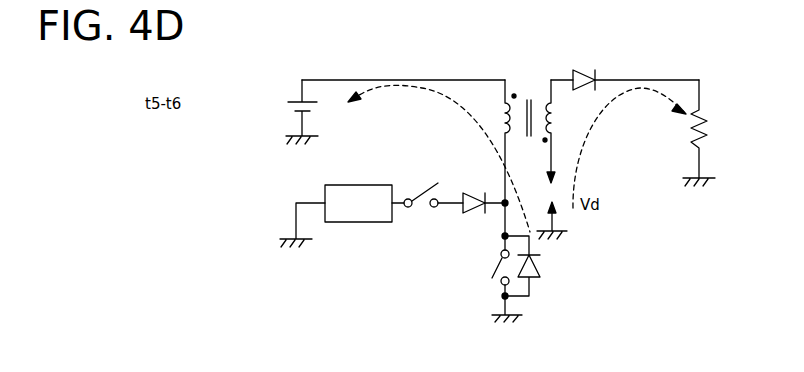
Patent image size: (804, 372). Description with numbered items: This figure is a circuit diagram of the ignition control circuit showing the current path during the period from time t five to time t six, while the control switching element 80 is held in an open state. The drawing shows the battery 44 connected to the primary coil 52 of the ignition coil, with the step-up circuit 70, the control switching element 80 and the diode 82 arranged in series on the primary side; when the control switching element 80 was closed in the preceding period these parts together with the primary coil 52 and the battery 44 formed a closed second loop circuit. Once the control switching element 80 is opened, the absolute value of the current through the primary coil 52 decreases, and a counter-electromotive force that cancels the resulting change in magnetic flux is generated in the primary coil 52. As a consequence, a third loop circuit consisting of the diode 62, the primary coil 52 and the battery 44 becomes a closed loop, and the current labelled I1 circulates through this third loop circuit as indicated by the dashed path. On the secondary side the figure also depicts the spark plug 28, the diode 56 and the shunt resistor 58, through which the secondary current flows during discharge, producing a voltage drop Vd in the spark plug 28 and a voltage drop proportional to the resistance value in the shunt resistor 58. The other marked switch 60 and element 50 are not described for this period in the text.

The battery 44 is at (292, 101).
The transformer 50 is at (527, 125).
The primary coil 52 is at (519, 100).
The diode 56 is at (583, 71).
The shunt resistor 58 is at (703, 112).
The step-up circuit 70 is at (360, 185).
The control switching element 80 is at (422, 186).
The diode 82 is at (477, 214).
The switch 60 is at (497, 267).
The diode 62 is at (541, 268).
The spark plug 28 is at (588, 182).
The current I1 is at (420, 90).